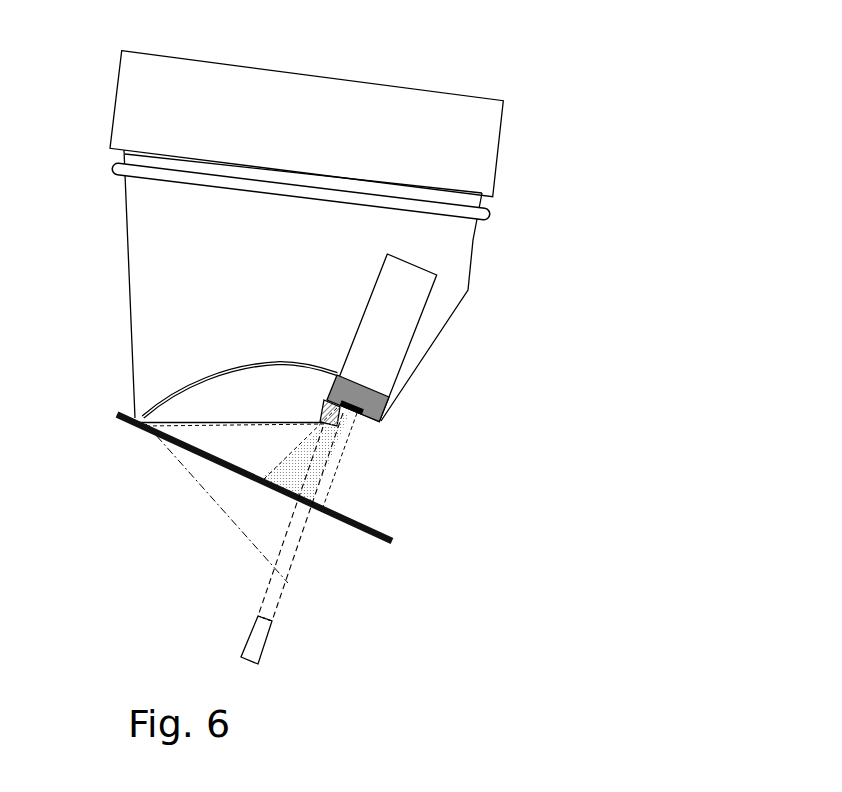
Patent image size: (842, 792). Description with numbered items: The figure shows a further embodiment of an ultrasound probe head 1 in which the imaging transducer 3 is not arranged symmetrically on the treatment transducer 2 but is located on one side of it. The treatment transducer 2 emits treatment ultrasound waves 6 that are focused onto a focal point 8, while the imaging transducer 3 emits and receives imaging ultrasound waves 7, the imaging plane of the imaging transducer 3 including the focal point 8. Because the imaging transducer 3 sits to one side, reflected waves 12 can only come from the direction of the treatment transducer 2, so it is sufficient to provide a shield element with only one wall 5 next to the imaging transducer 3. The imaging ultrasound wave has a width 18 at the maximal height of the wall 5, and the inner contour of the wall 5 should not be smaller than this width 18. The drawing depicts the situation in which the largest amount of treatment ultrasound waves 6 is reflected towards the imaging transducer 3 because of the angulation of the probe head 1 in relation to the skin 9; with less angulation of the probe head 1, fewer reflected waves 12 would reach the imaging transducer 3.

The probe head 1 is at (90, 38).
The treatment transducer 2 is at (190, 380).
The imaging transducer 3 is at (388, 411).
The wall 5 is at (338, 424).
The treatment ultrasound waves 6 is at (218, 502).
The imaging ultrasound waves 7 is at (270, 593).
The focal point 8 is at (287, 582).
The skin 9 is at (388, 532).
The reflected waves 12 is at (293, 467).
The width 18 is at (247, 663).